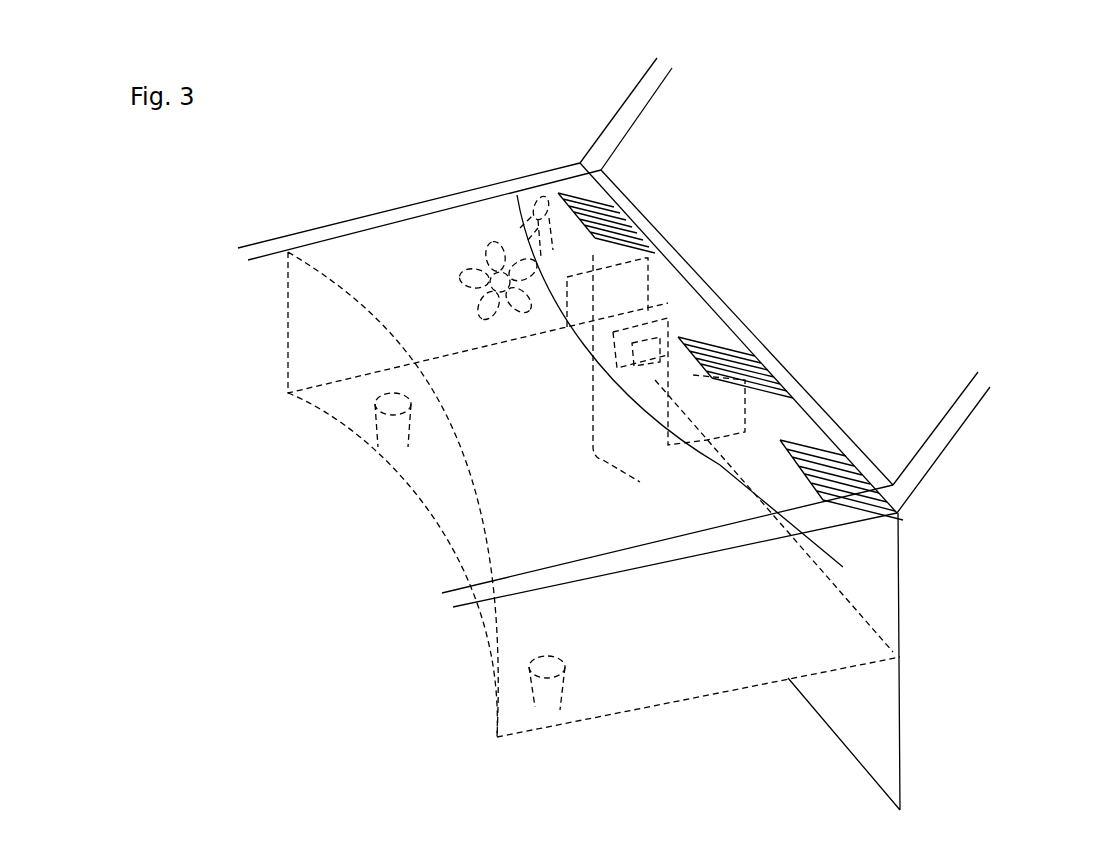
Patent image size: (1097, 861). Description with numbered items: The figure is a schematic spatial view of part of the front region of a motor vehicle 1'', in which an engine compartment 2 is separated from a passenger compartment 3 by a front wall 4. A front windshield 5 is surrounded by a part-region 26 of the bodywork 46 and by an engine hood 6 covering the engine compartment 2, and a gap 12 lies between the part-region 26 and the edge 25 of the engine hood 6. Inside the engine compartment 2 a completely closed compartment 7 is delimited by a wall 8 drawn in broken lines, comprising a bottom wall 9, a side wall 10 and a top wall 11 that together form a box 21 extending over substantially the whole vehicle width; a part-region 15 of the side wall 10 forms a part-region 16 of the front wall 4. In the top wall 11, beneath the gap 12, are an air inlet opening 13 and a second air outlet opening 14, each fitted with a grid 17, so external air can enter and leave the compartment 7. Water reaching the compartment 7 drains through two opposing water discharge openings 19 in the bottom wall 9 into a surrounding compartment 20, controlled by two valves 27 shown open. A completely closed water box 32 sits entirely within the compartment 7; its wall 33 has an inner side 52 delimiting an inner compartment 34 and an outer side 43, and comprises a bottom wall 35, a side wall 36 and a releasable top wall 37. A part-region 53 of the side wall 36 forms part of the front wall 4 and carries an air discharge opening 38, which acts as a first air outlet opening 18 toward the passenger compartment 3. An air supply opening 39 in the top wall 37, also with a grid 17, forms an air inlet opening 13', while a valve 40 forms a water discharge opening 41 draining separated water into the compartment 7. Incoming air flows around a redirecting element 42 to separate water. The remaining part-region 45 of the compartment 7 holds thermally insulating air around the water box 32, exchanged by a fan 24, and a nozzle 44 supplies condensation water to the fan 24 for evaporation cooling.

The motor vehicle 1'' is at (403, 59).
The engine compartment 2 is at (268, 275).
The passenger compartment 3 is at (643, 147).
The front wall 4 is at (887, 760).
The front windshield 5 is at (662, 122).
The engine hood 6 is at (702, 500).
The compartment 7 is at (537, 523).
The wall 8 is at (588, 687).
The bottom wall 9 is at (510, 657).
The side wall 10 is at (343, 397).
The top wall 11 is at (338, 257).
The gap 12 is at (843, 567).
The air inlet opening 13 is at (596, 176).
The air inlet opening 13' is at (777, 307).
The second air outlet opening 14 is at (808, 504).
The part-region of the side wall 15 is at (900, 560).
The part-region of the front wall 16 is at (885, 628).
The grid 17 is at (600, 182).
The first air outlet opening 18 is at (663, 300).
The water discharge openings 19 is at (393, 430).
The surrounding compartment 20 is at (428, 558).
The box 21 is at (713, 695).
The fan 24 is at (468, 262).
The edge of the engine hood 25 is at (777, 507).
The part-region of the bodywork 26 is at (898, 497).
The valves 27 is at (375, 417).
The water box 32 is at (745, 411).
The wall 33 is at (580, 305).
The inner compartment 34 is at (632, 307).
The bottom wall 35 is at (630, 393).
The side wall 36 is at (687, 430).
The top wall 37 is at (660, 307).
The air discharge opening 38 is at (655, 257).
The air supply opening 39 is at (745, 415).
The valve 40 is at (705, 405).
The water discharge opening 41 is at (652, 415).
The redirecting element 42 is at (688, 322).
The outer side 43 is at (895, 483).
The nozzle 44 is at (540, 198).
The part-region of the compartment 45 is at (397, 280).
The bodywork 46 is at (975, 397).
The inner side 52 is at (733, 387).
The part-region of the side wall 53 is at (740, 425).